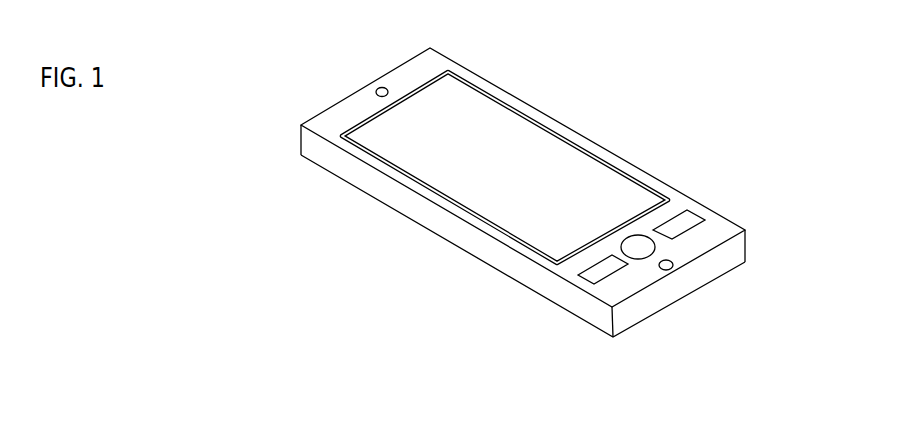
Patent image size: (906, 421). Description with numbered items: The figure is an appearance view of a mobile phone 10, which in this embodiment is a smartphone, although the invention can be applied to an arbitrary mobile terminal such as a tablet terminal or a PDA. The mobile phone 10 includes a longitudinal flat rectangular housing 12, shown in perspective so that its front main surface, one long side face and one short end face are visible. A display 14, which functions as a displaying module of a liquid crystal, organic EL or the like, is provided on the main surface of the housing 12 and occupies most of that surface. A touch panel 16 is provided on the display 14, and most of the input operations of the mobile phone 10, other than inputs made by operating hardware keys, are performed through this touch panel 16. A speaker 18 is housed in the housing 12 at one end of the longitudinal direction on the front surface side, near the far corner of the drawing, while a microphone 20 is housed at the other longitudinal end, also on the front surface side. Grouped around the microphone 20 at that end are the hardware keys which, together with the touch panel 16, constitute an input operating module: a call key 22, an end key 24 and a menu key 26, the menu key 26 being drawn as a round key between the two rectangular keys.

The mobile phone 10 is at (313, 54).
The housing 12 is at (420, 214).
The display 14 is at (485, 107).
The touch panel 16 is at (549, 142).
The speaker 18 is at (376, 92).
The microphone 20 is at (667, 270).
The call key 22 is at (590, 282).
The end key 24 is at (687, 215).
The menu key 26 is at (655, 247).